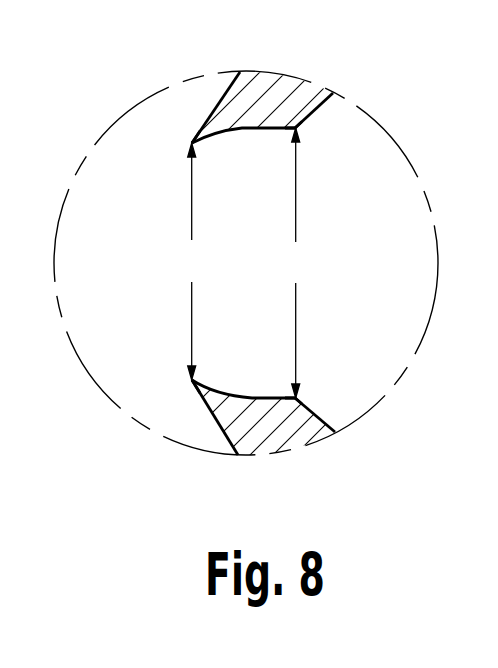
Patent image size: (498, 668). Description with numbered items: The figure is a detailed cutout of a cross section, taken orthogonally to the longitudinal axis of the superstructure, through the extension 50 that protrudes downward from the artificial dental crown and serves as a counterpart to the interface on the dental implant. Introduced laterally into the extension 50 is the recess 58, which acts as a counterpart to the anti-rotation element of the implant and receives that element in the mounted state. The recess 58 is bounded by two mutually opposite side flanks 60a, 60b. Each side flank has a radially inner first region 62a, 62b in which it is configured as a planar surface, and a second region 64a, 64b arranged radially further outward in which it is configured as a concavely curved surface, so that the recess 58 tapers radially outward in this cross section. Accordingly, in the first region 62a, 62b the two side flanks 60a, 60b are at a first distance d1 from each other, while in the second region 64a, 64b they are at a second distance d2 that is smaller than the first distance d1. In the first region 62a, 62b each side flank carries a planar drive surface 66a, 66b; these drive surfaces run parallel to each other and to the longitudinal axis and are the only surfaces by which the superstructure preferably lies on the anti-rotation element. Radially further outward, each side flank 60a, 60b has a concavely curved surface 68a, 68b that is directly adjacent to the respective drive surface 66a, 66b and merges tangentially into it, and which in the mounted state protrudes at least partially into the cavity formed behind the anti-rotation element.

The extension 50 is at (300, 84).
The recess 58 is at (250, 233).
The side flank 60a is at (248, 397).
The side flank 60b is at (242, 129).
The first region 62a is at (276, 400).
The first region 62b is at (277, 128).
The second region 64a is at (223, 432).
The second region 64b is at (221, 127).
The drive surface 66a is at (277, 397).
The drive surface 66b is at (297, 132).
The concavely curved surface 68a is at (208, 382).
The concavely curved surface 68b is at (207, 145).
The first distance d1 is at (298, 263).
The second distance d2 is at (194, 261).